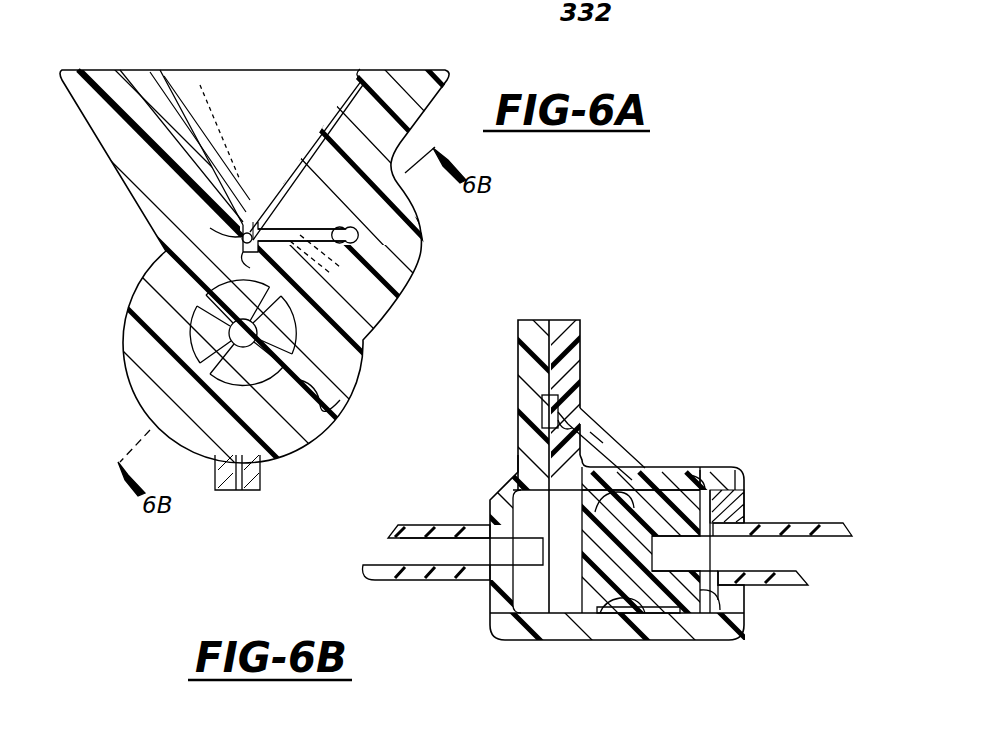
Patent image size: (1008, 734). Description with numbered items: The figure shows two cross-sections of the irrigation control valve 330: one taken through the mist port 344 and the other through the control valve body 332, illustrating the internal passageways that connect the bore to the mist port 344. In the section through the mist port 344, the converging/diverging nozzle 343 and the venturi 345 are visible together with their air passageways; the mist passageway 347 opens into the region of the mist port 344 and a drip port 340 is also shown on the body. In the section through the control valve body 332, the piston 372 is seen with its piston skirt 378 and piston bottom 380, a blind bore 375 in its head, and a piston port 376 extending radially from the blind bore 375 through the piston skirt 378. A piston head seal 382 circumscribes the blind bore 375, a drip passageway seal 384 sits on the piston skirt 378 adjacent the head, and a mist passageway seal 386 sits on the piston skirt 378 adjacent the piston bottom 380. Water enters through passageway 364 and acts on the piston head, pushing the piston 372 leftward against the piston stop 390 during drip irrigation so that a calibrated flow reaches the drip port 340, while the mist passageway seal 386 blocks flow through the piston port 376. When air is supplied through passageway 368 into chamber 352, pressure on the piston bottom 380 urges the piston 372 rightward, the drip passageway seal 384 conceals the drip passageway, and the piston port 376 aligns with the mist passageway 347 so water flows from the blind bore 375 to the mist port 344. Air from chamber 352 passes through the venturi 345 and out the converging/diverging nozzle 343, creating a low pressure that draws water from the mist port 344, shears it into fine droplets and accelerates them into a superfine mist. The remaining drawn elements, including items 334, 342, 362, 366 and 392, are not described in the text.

In FIG. 6B, the irrigation control valve 330 is at (745, 600).
In FIG. 6A, the control valve body 332 is at (405, 322).
In FIG. 6B, the control valve body 332 is at (466, 591).
In FIG. 6B, the seal 334 is at (692, 470).
In FIG. 6A, the drip port 340 is at (240, 492).
In FIG. 6B, the stem body 342 is at (500, 512).
In FIG. 6A, the converging/diverging nozzle 343 is at (372, 70).
In FIG. 6A, the mist port 344 is at (250, 230).
In FIG. 6A, the venturi 345 is at (238, 243).
In FIG. 6A, the mist passageway 347 is at (355, 232).
In FIG. 6B, the mist passageway 347 is at (588, 410).
In FIG. 6B, the chamber 352 is at (568, 612).
In FIG. 6B, the right tube 362 is at (840, 522).
In FIG. 6B, the passageway 364 is at (828, 540).
In FIG. 6B, the left tube 366 is at (420, 530).
In FIG. 6B, the passageway 368 is at (372, 567).
In FIG. 6B, the piston 372 is at (650, 622).
In FIG. 6B, the blind bore 375 is at (740, 480).
In FIG. 6A, the piston port 376 is at (210, 303).
In FIG. 6B, the piston port 376 is at (620, 470).
In FIG. 6B, the piston skirt 378 is at (735, 470).
In FIG. 6B, the piston bottom 380 is at (520, 642).
In FIG. 6B, the piston head seal 382 is at (740, 625).
In FIG. 6B, the drip passageway seal 384 is at (722, 470).
In FIG. 6B, the mist passageway seal 386 is at (676, 490).
In FIG. 6A, the piston stop 390 is at (338, 398).
In FIG. 6B, the piston stop 390 is at (532, 475).
In FIG. 6A, the vane 392 is at (200, 352).